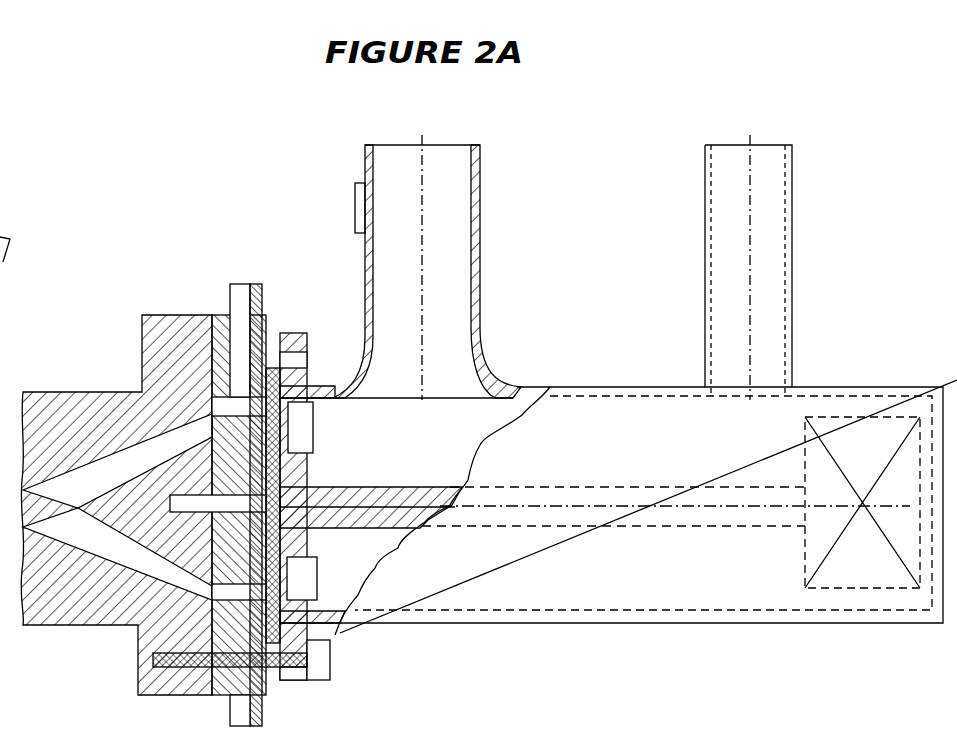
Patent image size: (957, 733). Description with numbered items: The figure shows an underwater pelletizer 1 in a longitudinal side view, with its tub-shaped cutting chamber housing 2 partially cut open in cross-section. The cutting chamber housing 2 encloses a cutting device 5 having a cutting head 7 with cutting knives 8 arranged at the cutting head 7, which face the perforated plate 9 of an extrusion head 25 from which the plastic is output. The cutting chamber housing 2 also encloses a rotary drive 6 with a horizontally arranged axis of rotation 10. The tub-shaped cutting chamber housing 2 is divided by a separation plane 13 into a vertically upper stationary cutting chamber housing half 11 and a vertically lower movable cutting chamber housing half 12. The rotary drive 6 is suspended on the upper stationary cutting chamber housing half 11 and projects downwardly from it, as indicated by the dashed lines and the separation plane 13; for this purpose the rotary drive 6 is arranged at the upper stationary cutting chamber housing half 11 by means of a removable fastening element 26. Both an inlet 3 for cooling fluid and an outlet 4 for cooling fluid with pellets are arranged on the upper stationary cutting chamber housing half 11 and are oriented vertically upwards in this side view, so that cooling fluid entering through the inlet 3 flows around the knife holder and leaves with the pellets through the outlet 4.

The underwater pelletizer 1 is at (860, 221).
The cutting chamber housing 2 is at (820, 387).
The inlet for cooling fluid 3 is at (790, 188).
The outlet for cooling fluid with pellets 4 is at (455, 187).
The cutting device 5 is at (317, 480).
The rotary drive 6 is at (865, 588).
The cutting head 7 is at (325, 537).
The cutting knives 8 is at (303, 421).
The perforated plate 9 is at (222, 315).
The axis of rotation 10 is at (548, 484).
The upper stationary cutting chamber housing half 11 is at (553, 396).
The lower movable cutting chamber housing half 12 is at (703, 603).
The separation plane 13 is at (662, 490).
The extrusion head 25 is at (97, 598).
The removable fastening element 26 is at (867, 407).